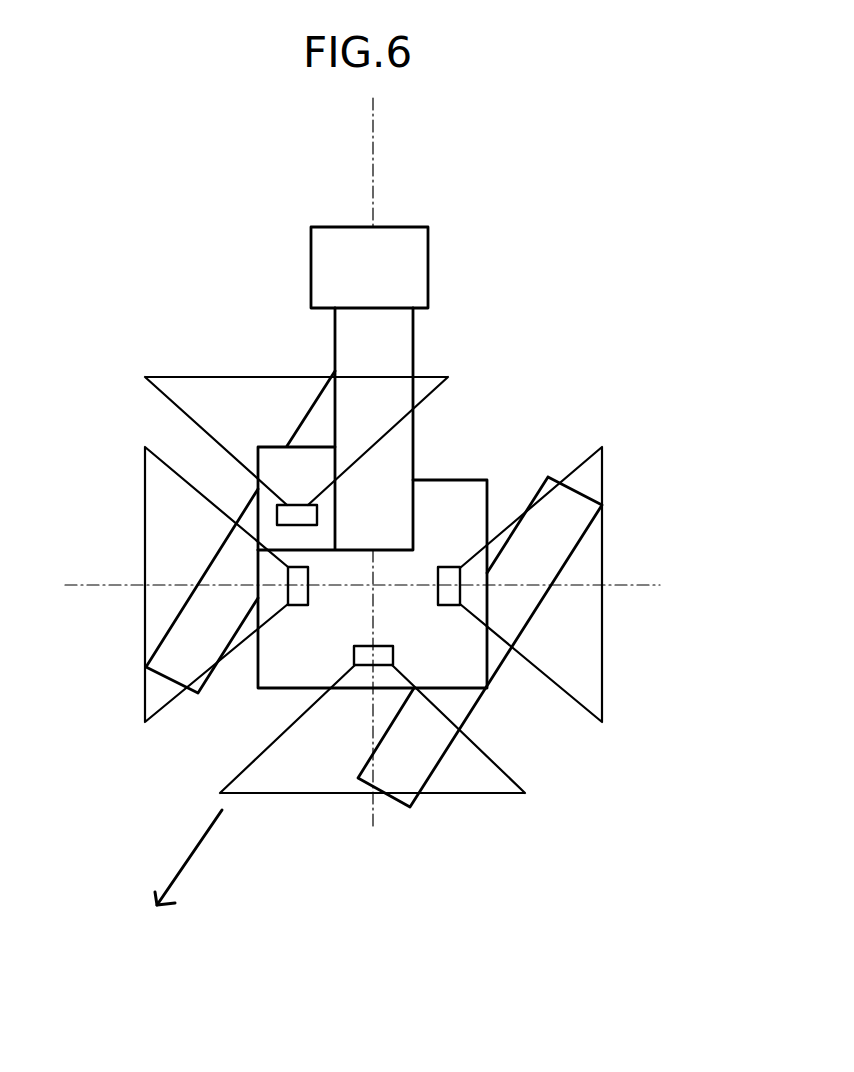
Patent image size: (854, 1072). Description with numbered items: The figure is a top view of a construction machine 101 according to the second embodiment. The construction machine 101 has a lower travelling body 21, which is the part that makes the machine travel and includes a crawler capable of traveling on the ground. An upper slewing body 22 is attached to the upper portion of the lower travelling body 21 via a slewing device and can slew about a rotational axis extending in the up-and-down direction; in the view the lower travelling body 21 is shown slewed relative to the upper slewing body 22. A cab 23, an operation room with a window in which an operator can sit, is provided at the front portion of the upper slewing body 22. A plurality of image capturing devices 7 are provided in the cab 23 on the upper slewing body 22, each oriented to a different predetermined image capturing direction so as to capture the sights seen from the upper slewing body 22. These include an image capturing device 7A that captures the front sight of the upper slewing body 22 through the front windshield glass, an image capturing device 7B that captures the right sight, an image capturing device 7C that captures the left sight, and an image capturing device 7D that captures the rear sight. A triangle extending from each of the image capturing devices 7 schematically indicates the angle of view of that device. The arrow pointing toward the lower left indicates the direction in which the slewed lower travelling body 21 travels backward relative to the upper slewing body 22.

The construction machine 101 is at (520, 250).
The cab 23 is at (275, 460).
The upper slewing body 22 is at (448, 660).
The lower travelling body 21 is at (432, 770).
The image capturing devices 7 is at (281, 599).
The image capturing device 7A is at (277, 518).
The image capturing device 7B is at (448, 567).
The image capturing device 7C is at (293, 607).
The image capturing device 7D is at (357, 653).